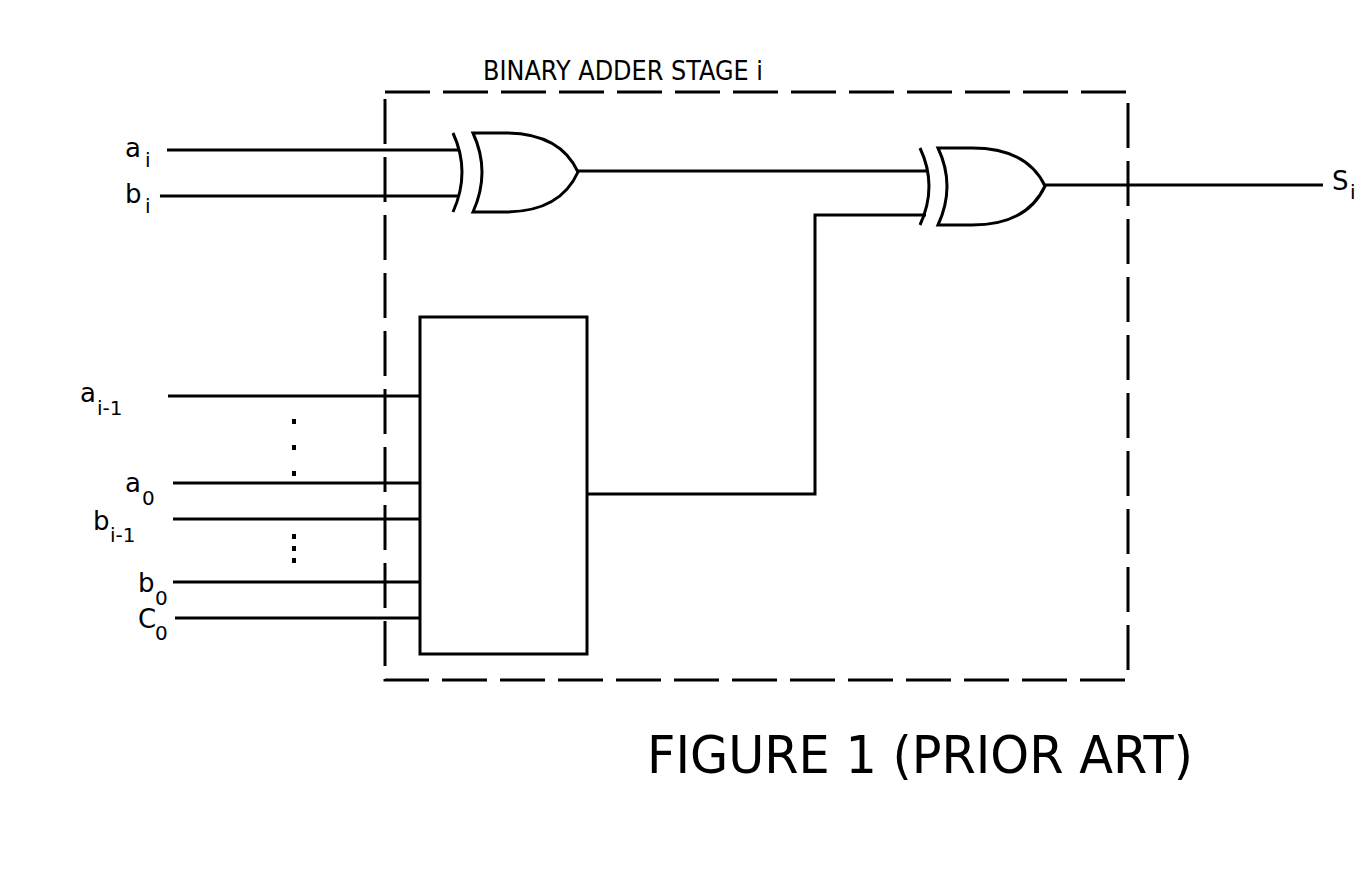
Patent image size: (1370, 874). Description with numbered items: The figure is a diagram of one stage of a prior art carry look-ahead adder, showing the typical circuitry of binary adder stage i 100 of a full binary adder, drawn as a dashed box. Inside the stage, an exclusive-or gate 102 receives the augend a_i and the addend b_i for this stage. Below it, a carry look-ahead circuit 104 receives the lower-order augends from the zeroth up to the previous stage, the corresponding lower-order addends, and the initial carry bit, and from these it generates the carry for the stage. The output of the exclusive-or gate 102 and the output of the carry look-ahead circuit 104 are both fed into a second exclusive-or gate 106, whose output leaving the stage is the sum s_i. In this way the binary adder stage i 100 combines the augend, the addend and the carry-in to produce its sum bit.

The binary adder stage i 100 is at (1130, 115).
The exclusive-or gate 102 is at (550, 198).
The carry look-ahead circuit 104 is at (587, 410).
The exclusive-or gate 106 is at (978, 148).